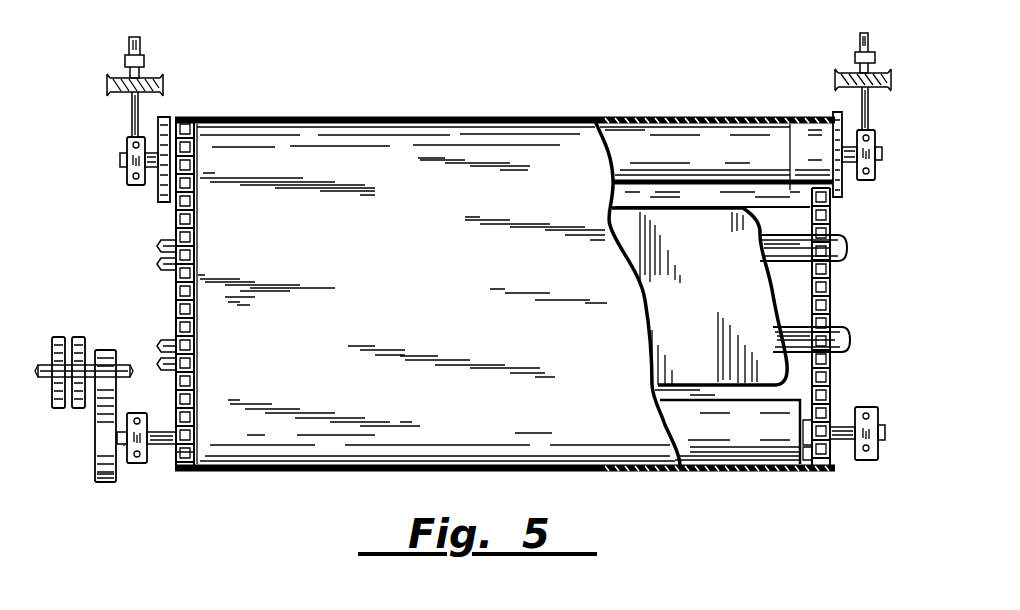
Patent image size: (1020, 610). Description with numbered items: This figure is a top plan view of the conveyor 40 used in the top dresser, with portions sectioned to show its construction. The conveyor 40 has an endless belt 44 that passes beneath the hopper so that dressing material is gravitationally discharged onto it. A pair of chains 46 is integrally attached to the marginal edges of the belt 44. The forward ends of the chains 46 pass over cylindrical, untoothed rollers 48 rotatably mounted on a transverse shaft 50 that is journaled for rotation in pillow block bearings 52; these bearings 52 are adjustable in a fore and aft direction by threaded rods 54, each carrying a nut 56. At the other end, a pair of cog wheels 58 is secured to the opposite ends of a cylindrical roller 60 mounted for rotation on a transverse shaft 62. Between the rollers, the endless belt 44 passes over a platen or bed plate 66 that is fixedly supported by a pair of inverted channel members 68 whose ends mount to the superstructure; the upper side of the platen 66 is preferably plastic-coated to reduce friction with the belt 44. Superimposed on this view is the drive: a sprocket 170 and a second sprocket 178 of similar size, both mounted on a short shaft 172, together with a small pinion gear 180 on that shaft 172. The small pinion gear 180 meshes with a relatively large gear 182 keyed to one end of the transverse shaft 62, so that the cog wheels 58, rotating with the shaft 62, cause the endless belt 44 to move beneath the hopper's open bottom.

The conveyor 40 is at (584, 104).
The endless belt 44 is at (420, 304).
The chains 46 is at (175, 298).
The rollers 48 is at (802, 137).
The transverse shaft 50 is at (120, 160).
The pillow block bearings 52 is at (135, 187).
The threaded rods 54 is at (132, 108).
The nut 56 is at (141, 47).
The cog wheels 58 is at (177, 458).
The cylindrical roller 60 is at (717, 433).
The transverse shaft 62 is at (123, 447).
The platen 66 is at (720, 301).
The inverted channel members 68 is at (848, 243).
The sprocket 170 is at (58, 337).
The short shaft 172 is at (128, 371).
The second sprocket 178 is at (78, 337).
The small pinion gear 180 is at (108, 350).
The large gear 182 is at (106, 485).